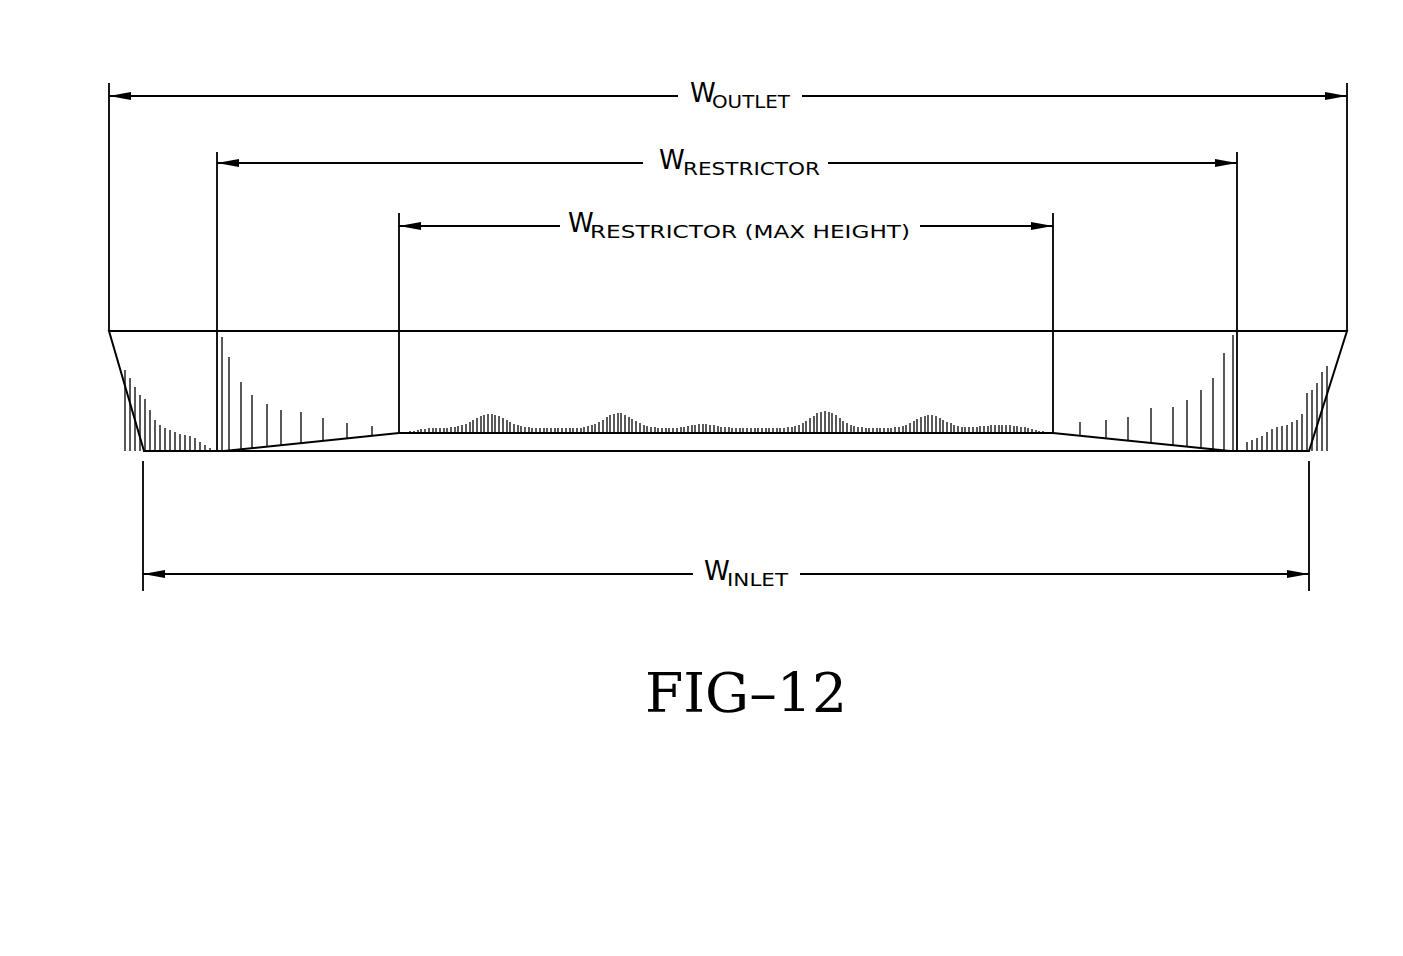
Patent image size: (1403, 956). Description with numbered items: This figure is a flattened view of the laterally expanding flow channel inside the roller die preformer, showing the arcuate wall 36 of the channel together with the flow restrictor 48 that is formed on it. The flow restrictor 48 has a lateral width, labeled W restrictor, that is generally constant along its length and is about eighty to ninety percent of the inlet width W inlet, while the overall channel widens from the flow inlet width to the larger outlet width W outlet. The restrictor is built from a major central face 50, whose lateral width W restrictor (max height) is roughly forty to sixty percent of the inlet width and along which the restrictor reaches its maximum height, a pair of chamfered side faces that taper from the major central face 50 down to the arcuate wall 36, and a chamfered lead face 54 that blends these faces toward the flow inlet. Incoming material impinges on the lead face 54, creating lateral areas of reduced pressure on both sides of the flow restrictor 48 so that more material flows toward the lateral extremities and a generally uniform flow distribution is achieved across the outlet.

The arcuate wall 36 is at (1273, 413).
The flow restrictor 48 is at (527, 340).
The major central face 50 is at (900, 390).
The chamfered lead face 54 is at (517, 440).